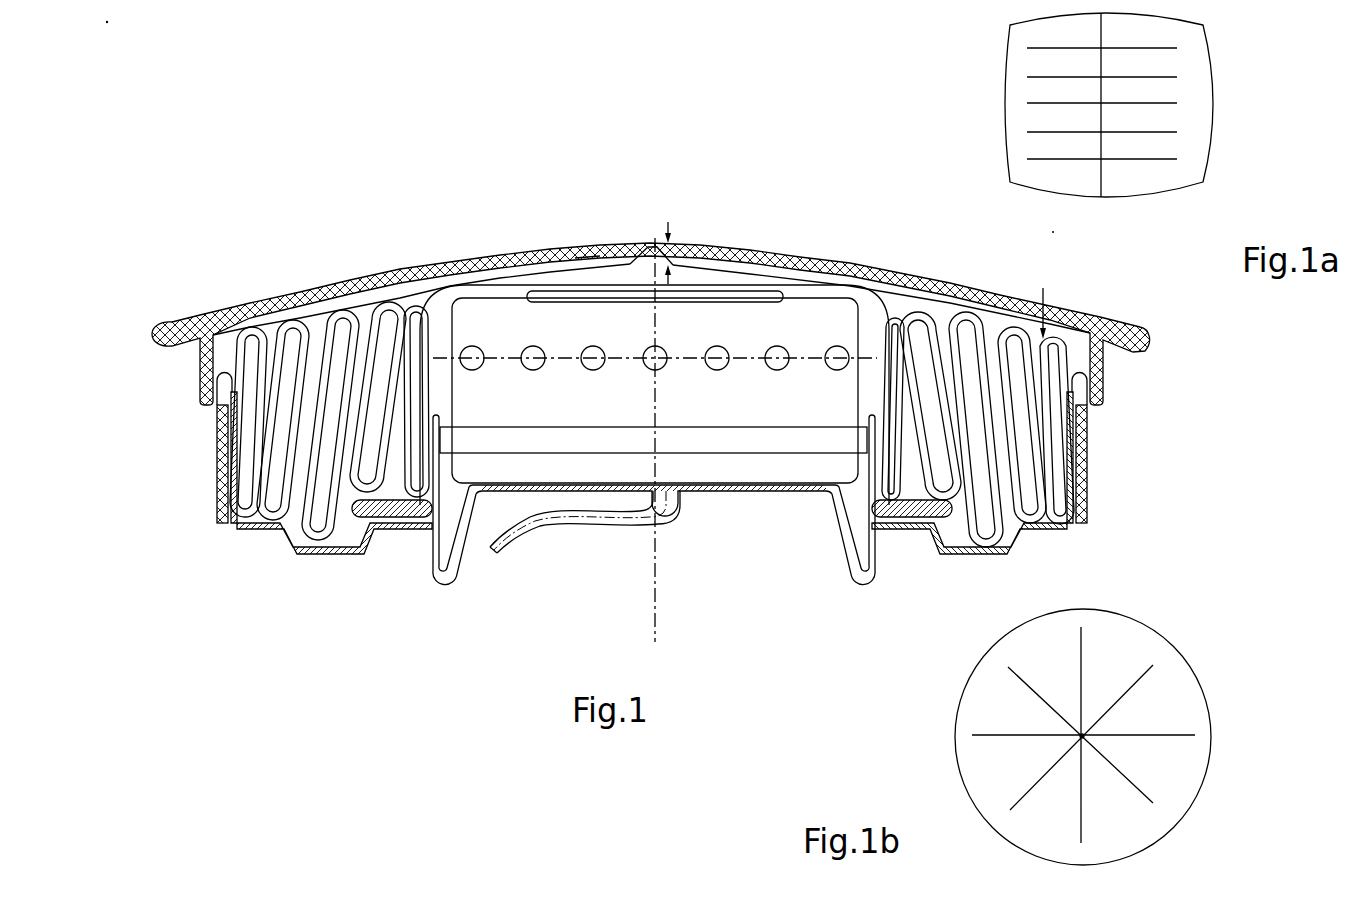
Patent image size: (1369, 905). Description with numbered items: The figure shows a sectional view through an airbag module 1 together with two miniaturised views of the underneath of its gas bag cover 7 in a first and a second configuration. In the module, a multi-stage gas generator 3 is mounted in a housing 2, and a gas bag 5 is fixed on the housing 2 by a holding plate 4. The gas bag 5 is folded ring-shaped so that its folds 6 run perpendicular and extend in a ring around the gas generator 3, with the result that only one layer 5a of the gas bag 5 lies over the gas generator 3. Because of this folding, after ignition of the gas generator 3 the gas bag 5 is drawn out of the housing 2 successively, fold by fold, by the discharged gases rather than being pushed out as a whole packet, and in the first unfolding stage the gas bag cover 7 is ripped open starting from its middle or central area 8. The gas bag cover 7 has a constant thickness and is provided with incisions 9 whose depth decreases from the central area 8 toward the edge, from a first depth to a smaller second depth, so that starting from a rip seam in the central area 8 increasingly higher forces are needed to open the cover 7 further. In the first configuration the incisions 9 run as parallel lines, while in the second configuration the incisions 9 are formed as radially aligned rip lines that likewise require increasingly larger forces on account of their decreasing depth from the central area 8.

In FIG. 1, the airbag module 1 is at (400, 243).
In FIG. 1, the housing 2 is at (1050, 526).
In FIG. 1, the multi-stage gas generator 3 is at (790, 403).
In FIG. 1, the holding plate 4 is at (433, 487).
In FIG. 1, the gas bag 5 is at (903, 343).
In FIG. 1, the layer of the gas bag 5a is at (538, 286).
In FIG. 1, the folds 6 is at (389, 301).
In FIG. 1, the gas bag cover 7 is at (232, 322).
In FIG. 1A, the gas bag cover 7 is at (1190, 175).
In FIG. 1B, the gas bag cover 7 is at (1015, 777).
In FIG. 1, the central area 8 is at (652, 250).
In FIG. 1A, the central area 8 is at (1107, 173).
In FIG. 1B, the central area 8 is at (1090, 740).
In FIG. 1, the incisions 9 is at (587, 261).
In FIG. 1A, the incisions 9 is at (1037, 158).
In FIG. 1B, the incisions 9 is at (1140, 680).